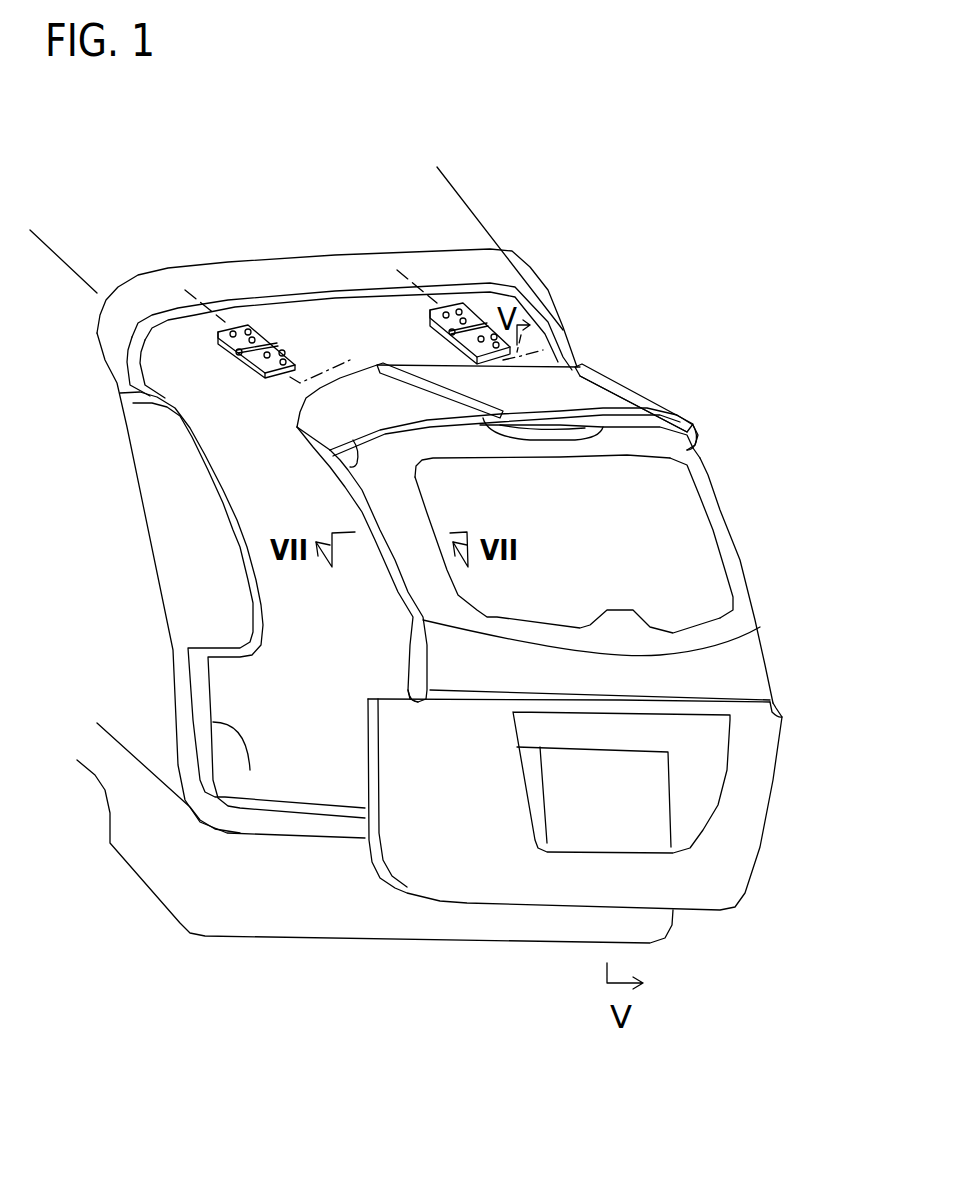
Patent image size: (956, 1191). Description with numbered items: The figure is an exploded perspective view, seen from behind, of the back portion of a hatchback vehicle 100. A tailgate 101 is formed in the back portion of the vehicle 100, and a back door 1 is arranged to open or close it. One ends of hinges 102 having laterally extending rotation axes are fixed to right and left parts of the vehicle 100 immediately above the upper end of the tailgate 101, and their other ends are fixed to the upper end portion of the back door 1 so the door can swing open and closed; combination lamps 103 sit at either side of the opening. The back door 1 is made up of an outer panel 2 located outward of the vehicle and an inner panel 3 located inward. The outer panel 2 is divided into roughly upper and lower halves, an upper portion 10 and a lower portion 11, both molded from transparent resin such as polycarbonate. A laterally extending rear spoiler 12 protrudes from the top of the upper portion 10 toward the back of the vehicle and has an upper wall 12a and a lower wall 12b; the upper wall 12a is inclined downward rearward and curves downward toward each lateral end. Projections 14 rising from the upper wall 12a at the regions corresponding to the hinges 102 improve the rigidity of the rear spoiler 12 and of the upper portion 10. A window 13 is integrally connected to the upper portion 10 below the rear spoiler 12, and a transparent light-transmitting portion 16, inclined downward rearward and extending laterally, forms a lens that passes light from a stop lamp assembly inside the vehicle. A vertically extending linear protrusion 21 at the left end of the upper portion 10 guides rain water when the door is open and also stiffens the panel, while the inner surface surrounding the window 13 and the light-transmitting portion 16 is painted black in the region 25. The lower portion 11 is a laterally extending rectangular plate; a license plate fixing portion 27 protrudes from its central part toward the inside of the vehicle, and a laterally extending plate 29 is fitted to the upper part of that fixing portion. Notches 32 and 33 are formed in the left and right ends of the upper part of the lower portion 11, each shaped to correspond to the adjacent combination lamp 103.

The vehicle 100 is at (478, 204).
The tailgate 101 is at (250, 770).
The hinges 102 is at (240, 327).
The combination lamps 103 is at (337, 531).
The back door 1 is at (627, 350).
The outer panel 2 is at (833, 597).
The inner panel 3 is at (388, 592).
The upper portion 10 is at (743, 616).
The lower portion 11 is at (760, 668).
The rear spoiler 12 is at (468, 378).
The upper wall 12a is at (583, 393).
The lower wall 12b is at (700, 447).
The window 13 is at (443, 500).
The projections 14 is at (376, 364).
The light-transmitting portion 16 is at (677, 408).
The linear protrusion 21 is at (327, 393).
The black painted region 25 is at (717, 517).
The license plate fixing portion 27 is at (657, 803).
The plate 29 is at (530, 730).
The notch 32 is at (410, 683).
The notch 33 is at (777, 703).